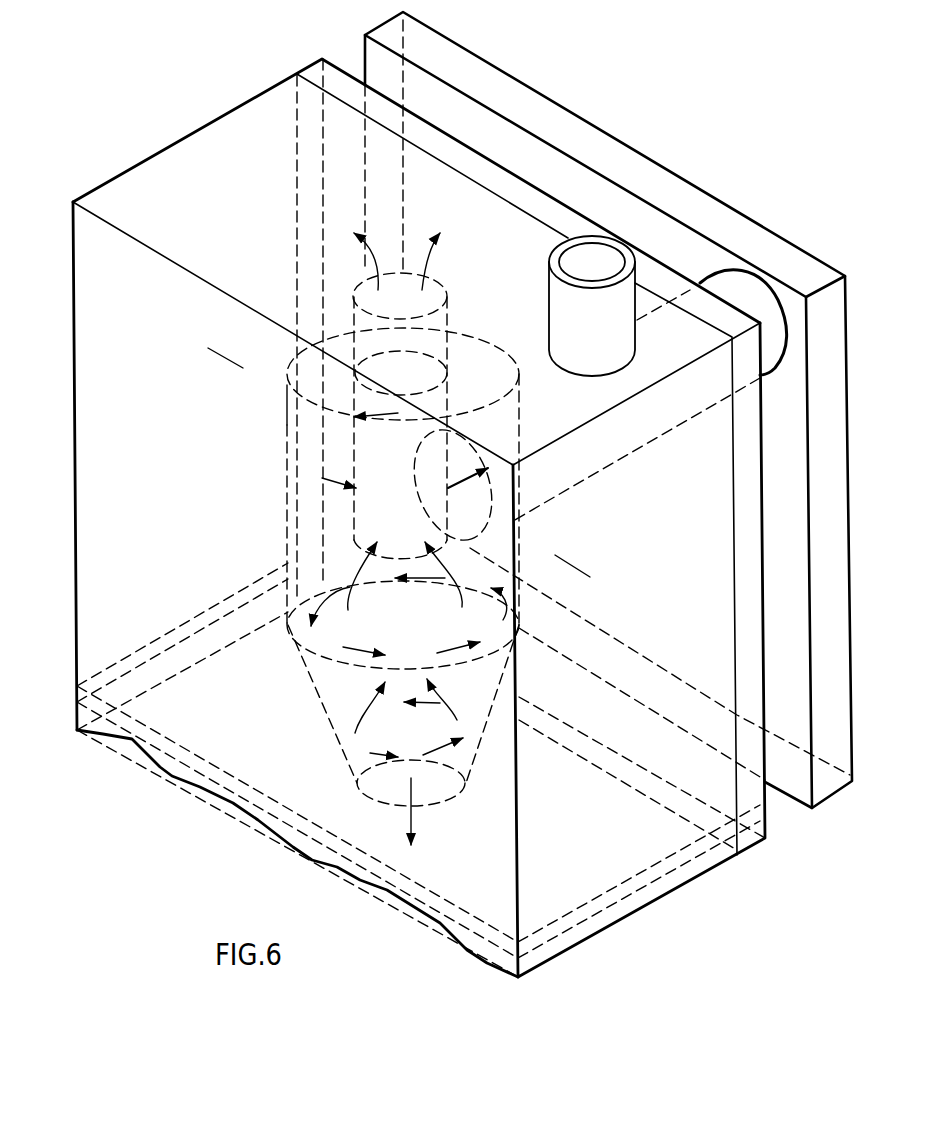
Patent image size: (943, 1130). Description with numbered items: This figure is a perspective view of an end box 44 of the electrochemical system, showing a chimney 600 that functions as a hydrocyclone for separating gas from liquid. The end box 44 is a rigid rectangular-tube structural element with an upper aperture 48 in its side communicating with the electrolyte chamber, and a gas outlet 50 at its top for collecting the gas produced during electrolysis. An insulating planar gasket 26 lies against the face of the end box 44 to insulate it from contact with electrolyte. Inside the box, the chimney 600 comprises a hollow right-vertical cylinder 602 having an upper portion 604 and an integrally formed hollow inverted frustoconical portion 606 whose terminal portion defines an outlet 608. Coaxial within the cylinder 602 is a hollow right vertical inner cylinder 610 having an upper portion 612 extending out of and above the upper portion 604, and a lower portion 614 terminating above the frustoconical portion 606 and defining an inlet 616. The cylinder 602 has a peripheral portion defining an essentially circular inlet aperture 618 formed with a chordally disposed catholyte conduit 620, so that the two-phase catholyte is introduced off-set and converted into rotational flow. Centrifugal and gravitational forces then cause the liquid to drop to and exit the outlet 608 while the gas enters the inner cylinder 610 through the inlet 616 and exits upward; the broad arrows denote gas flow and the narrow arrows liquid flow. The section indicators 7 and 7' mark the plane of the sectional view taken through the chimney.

The insulating planar gasket 26 is at (687, 198).
The end box 44 is at (74, 356).
The upper aperture 48 is at (297, 137).
The gas outlet 50 is at (580, 235).
The chimney 600 is at (240, 571).
The hollow right-vertical cylinder 602 is at (287, 493).
The upper portion 604 is at (297, 425).
The hollow inverted frustoconical portion 606 is at (328, 719).
The outlet 608 is at (363, 797).
The hollow right vertical inner cylinder 610 is at (357, 375).
The upper portion 612 is at (353, 313).
The lower portion 614 is at (353, 468).
The inlet 616 is at (358, 556).
The inlet aperture 618 is at (487, 530).
The catholyte conduit 620 is at (618, 458).
The section line 7 is at (217, 358).
The section line 7' is at (584, 578).